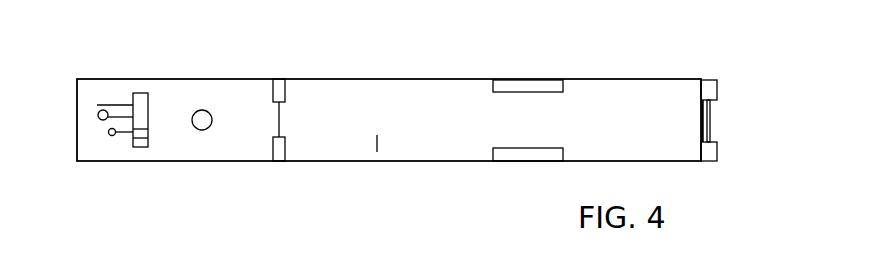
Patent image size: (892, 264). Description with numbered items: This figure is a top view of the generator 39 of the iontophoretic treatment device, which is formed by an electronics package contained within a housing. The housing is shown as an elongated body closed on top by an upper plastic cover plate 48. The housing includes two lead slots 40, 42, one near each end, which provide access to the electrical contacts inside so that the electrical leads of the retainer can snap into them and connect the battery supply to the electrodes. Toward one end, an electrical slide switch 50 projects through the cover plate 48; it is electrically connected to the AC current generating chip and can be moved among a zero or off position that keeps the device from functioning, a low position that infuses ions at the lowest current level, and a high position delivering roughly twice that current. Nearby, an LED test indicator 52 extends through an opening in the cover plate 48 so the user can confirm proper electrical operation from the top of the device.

The generator 39 is at (459, 117).
The lead slot 40 is at (377, 147).
The lead slot 42 is at (678, 103).
The upper plastic cover plate 48 is at (402, 97).
The electrical slide switch 50 is at (140, 93).
The LED test indicator 52 is at (201, 130).